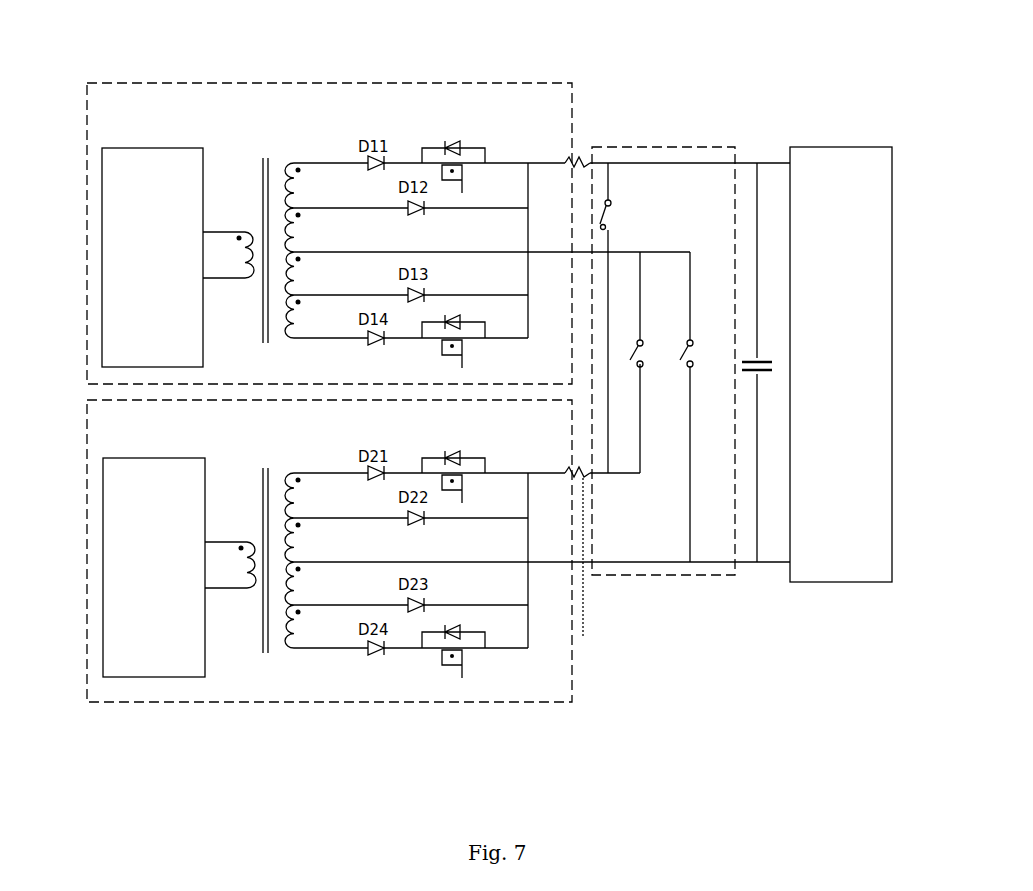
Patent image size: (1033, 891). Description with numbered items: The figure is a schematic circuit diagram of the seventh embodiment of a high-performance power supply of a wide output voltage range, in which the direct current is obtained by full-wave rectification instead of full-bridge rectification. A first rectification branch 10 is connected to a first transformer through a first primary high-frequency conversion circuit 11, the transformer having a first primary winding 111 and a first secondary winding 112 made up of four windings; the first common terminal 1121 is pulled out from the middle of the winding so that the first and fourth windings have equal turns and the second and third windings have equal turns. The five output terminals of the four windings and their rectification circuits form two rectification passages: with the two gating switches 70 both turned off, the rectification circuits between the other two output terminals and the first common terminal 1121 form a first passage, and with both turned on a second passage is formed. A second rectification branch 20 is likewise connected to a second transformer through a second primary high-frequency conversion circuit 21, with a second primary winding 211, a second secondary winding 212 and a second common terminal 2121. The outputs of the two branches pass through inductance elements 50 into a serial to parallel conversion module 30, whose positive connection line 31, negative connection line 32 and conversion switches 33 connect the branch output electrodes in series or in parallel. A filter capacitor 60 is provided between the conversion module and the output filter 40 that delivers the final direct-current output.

The first rectification branch 10 is at (163, 82).
The first primary high-frequency conversion circuit 11 is at (112, 190).
The first primary winding 111 is at (250, 230).
The first secondary winding 112 is at (290, 162).
The first common terminal 1121 is at (380, 252).
The second rectification branch 20 is at (158, 705).
The second primary high-frequency conversion circuit 21 is at (120, 510).
The second primary winding 211 is at (253, 540).
The second secondary winding 212 is at (290, 472).
The second common terminal 2121 is at (507, 564).
The serial to parallel conversion module 30 is at (638, 146).
The positive connection line 31 is at (707, 146).
The negative connection line 32 is at (660, 576).
The conversion switch 33 is at (606, 228).
The output filter 40 is at (868, 238).
The inductance element 50 is at (580, 160).
The filter capacitor 60 is at (770, 358).
The gating switch 70 is at (463, 192).